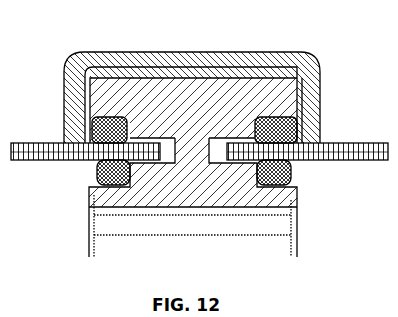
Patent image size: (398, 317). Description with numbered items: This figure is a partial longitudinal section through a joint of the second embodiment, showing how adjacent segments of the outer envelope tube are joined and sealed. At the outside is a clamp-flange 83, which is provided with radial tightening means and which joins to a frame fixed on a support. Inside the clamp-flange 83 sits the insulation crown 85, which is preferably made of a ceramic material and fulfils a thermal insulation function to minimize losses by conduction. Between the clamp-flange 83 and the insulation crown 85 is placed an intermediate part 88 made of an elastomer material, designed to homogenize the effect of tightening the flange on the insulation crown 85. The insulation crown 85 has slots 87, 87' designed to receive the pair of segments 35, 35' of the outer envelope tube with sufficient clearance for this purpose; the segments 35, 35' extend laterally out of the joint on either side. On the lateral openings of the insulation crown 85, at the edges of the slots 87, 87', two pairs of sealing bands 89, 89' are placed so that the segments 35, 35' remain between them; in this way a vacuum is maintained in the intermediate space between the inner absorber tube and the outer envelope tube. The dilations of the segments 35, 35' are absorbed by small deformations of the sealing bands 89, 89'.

The clamp-flange 83 is at (113, 57).
The insulation crown 85 is at (185, 120).
The intermediate part 88 is at (242, 78).
The segment of outer envelope tube 35 is at (85, 129).
The segment of outer envelope tube 35' is at (307, 129).
The sealing bands 89 is at (90, 162).
The sealing bands 89' is at (301, 162).
The slot 87 is at (193, 202).
The slot 87' is at (251, 210).